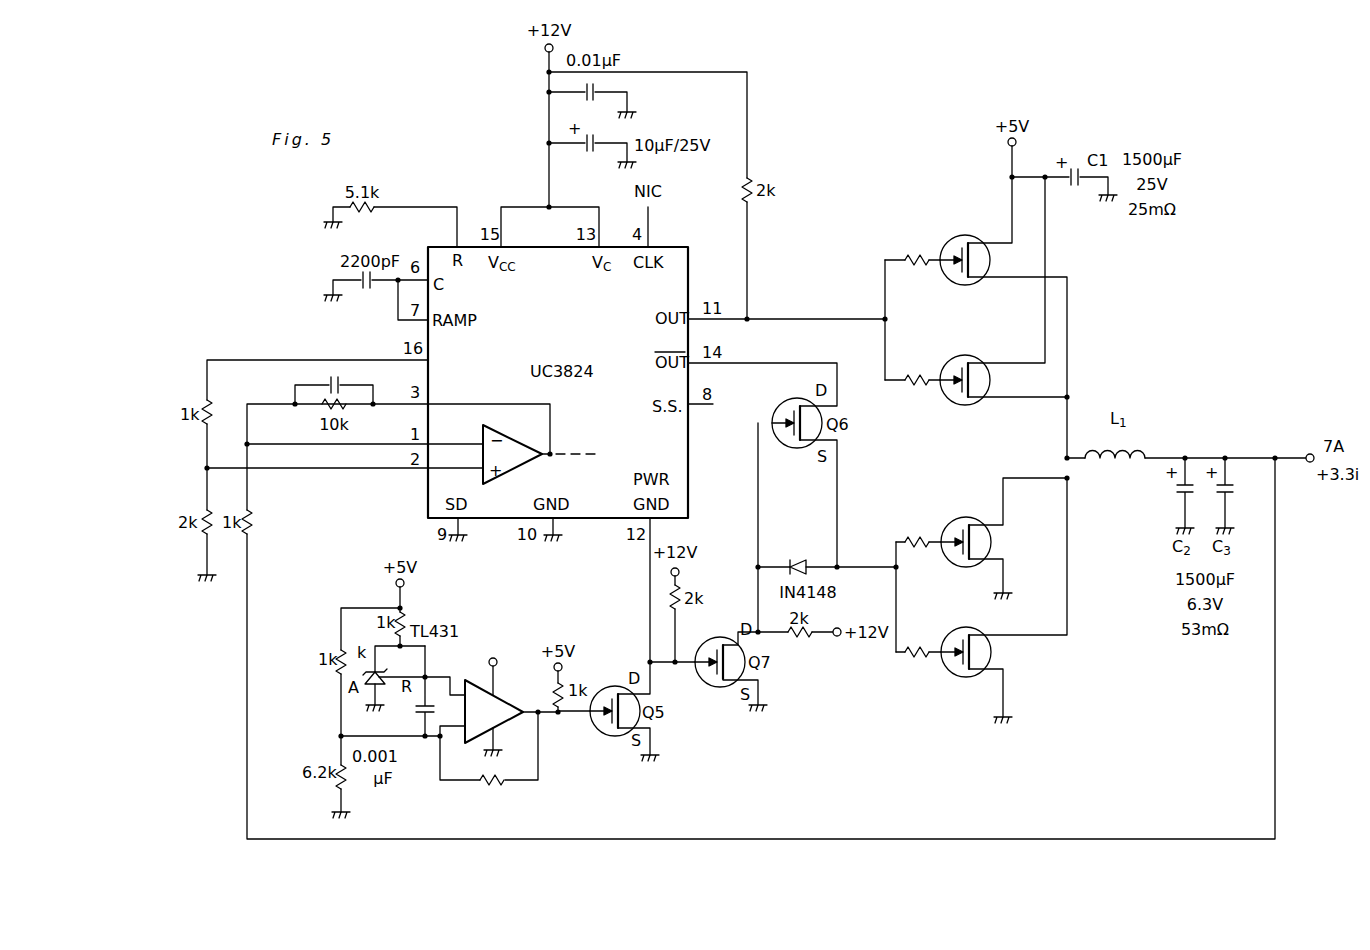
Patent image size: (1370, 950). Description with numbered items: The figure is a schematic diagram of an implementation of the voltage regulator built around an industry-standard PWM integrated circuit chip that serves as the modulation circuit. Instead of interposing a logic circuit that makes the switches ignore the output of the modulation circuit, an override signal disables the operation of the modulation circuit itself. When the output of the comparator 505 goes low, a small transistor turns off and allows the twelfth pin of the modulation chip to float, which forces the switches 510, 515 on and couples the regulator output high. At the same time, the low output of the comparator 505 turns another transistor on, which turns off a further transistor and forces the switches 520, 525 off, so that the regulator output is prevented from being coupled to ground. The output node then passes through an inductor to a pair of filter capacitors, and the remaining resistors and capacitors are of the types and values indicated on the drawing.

The comparator 505 is at (507, 701).
The switch 510 is at (947, 242).
The switch 515 is at (950, 400).
The switch 520 is at (947, 524).
The switch 525 is at (950, 673).